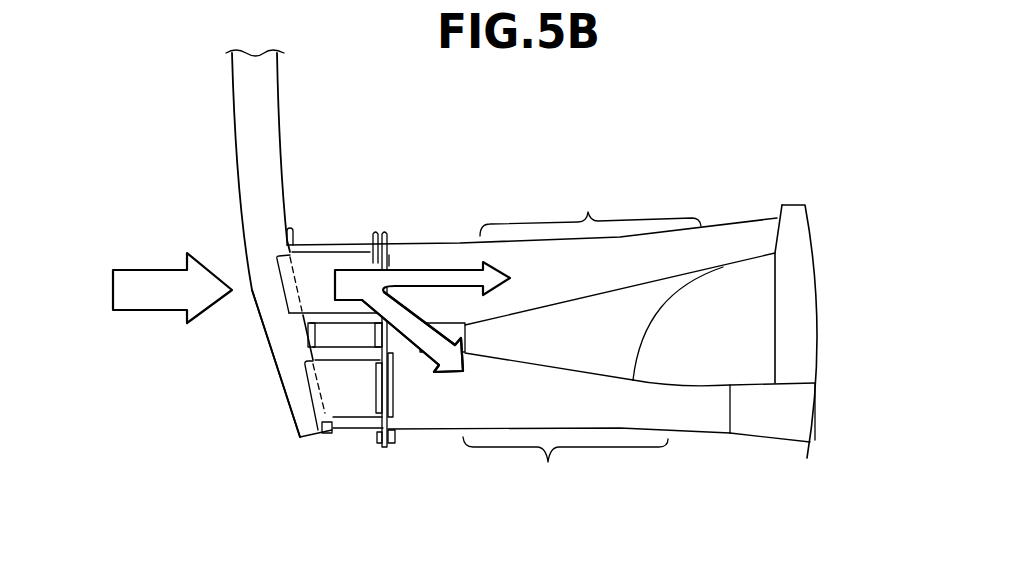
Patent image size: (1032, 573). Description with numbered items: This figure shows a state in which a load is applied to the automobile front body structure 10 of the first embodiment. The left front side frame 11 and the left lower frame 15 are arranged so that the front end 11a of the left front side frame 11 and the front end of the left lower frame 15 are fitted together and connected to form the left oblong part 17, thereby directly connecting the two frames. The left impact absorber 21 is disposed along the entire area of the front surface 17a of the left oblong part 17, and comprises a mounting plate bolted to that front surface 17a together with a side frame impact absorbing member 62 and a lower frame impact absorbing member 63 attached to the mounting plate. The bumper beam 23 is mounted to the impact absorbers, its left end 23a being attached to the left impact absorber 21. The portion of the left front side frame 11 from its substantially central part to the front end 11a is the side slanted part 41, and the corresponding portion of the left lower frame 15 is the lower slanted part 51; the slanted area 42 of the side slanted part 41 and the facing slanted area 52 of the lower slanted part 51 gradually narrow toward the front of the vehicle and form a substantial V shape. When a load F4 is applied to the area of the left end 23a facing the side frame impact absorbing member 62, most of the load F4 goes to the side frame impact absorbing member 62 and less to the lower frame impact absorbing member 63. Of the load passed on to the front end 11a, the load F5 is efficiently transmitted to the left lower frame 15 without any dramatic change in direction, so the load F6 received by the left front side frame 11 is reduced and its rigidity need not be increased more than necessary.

The automobile front body structure 10 is at (727, 97).
The left front side frame 11 is at (743, 233).
The front end of the left front side frame 11a is at (397, 244).
The left lower frame 15 is at (708, 422).
The left oblong part 17 is at (418, 257).
The front surface of the left oblong part 17a is at (371, 236).
The left impact absorber 21 is at (331, 223).
The bumper beam 23 is at (252, 89).
The left end of the bumper beam 23a is at (283, 357).
The side slanted part 41 is at (590, 210).
The slanted area of the side slanted part 42 is at (588, 298).
The lower slanted part 51 is at (559, 475).
The slanted area of the lower slanted part 52 is at (590, 371).
The side frame impact absorbing member 62 is at (313, 266).
The lower frame impact absorbing member 63 is at (333, 390).
The load F4 is at (146, 288).
The load F5 is at (422, 345).
The load F6 is at (443, 268).